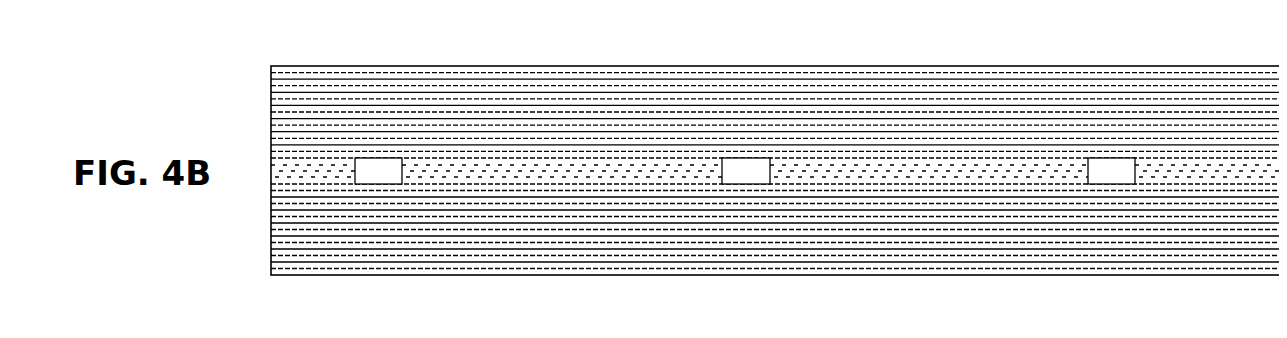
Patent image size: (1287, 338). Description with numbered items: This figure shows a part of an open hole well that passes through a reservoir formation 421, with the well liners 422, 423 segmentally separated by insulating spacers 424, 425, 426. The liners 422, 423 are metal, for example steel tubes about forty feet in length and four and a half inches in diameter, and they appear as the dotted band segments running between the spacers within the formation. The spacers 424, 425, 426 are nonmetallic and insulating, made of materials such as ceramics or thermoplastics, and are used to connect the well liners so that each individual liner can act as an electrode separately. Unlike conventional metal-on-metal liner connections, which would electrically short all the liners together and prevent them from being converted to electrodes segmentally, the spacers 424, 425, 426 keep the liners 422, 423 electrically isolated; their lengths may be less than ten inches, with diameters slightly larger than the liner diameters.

The reservoir formation 421 is at (1075, 245).
The liner 422 is at (627, 160).
The liner 423 is at (877, 160).
The insulating spacer 424 is at (367, 150).
The insulating spacer 425 is at (744, 150).
The insulating spacer 426 is at (1104, 150).